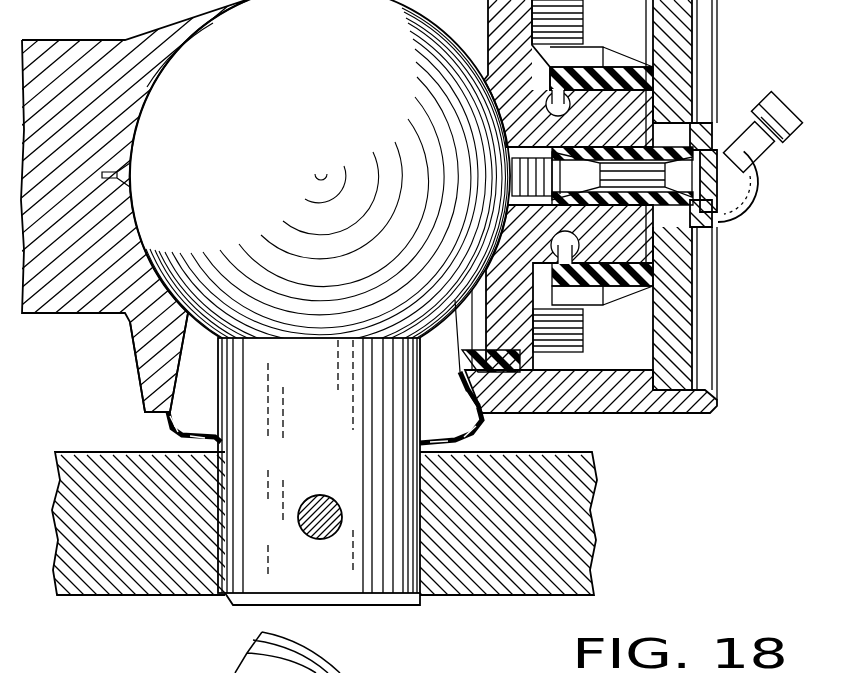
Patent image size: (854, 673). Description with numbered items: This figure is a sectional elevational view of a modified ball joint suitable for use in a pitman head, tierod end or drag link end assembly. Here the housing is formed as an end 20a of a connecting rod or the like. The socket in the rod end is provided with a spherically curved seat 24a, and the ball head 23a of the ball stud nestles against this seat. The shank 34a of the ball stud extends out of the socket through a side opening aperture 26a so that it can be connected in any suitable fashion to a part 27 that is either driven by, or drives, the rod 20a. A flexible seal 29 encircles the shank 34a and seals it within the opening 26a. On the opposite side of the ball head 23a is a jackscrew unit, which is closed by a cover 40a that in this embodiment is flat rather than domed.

The end of connecting rod 20a is at (87, 58).
The ball head 23a is at (282, 198).
The spherically curved seat 24a is at (162, 64).
The side opening aperture 26a is at (190, 340).
The part 27 is at (168, 574).
The flexible seal 29 is at (482, 430).
The shank 34a is at (350, 428).
The cover 40a is at (683, 342).